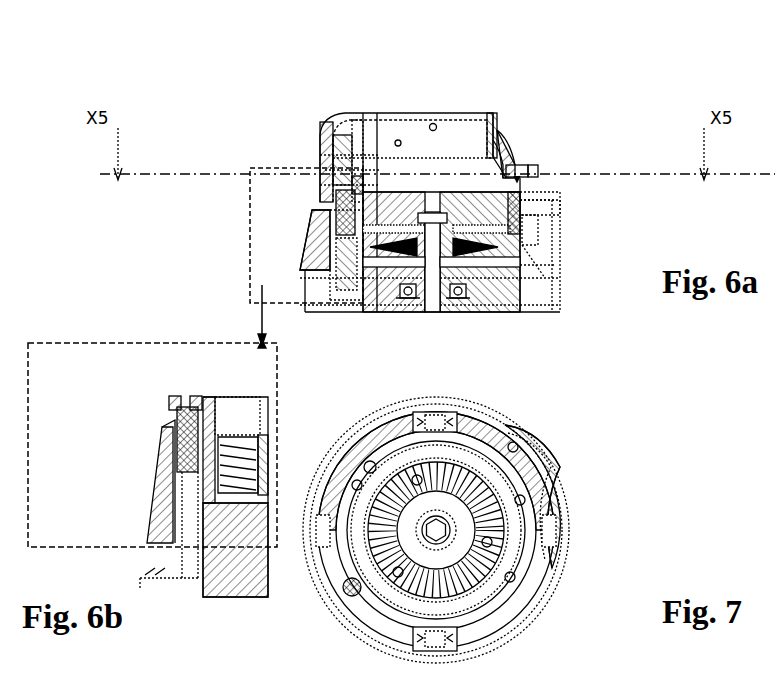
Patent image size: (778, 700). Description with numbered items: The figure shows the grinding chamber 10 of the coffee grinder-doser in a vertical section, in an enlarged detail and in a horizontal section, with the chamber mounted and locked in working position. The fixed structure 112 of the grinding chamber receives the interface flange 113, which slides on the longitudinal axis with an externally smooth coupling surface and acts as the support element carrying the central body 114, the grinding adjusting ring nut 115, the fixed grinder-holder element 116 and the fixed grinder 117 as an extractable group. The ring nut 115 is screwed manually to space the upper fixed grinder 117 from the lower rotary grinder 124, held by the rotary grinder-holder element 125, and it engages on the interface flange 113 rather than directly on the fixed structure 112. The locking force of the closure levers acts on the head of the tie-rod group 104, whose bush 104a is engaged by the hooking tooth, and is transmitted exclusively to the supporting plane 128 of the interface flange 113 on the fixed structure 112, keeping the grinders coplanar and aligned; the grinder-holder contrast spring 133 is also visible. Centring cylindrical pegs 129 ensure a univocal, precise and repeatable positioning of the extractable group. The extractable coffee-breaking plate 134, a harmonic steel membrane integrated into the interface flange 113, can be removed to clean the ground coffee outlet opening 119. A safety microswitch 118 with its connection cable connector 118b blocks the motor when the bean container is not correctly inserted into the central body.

In FIG. 6A, the grinding chamber 10 is at (636, 115).
In FIG. 6A, the head of the tie-rod group 104 is at (433, 313).
In FIG. 7, the head of the tie-rod group 104 is at (435, 566).
In FIG. 6A, the bush 104a is at (512, 341).
In FIG. 7, the bush 104a is at (420, 566).
In FIG. 6B, the fixed structure of the grinding chamber 112 is at (162, 408).
In FIG. 6A, the interface flange 113 is at (518, 175).
In FIG. 6A, the central body of the extractable group 114 is at (486, 170).
In FIG. 6A, the grinding adjusting ring nut 115 is at (506, 170).
In FIG. 6A, the fixed grinder-holder element 116 is at (457, 236).
In FIG. 6A, the fixed grinder 117 is at (562, 211).
In FIG. 6A, the safety microswitch 118 is at (325, 131).
In FIG. 6A, the microswitch connection cable connector 118b is at (325, 186).
In FIG. 6B, the microswitch connection cable connector 118b is at (182, 391).
In FIG. 7, the ground coffee outlet opening 119 is at (562, 468).
In FIG. 6A, the rotary grinder 124 is at (562, 235).
In FIG. 7, the rotary grinder 124 is at (522, 435).
In FIG. 6A, the rotary grinder-holder element 125 is at (531, 252).
In FIG. 6B, the supporting plane of the interface flange 128 is at (238, 445).
In FIG. 6A, the centring cylindrical peg 129 is at (432, 311).
In FIG. 7, the centring cylindrical peg 129 is at (437, 531).
In FIG. 6A, the grinder-holder contrast spring 133 is at (320, 201).
In FIG. 6B, the grinder-holder contrast spring 133 is at (178, 426).
In FIG. 6A, the extractable coffee-breaking plate 134 is at (540, 176).